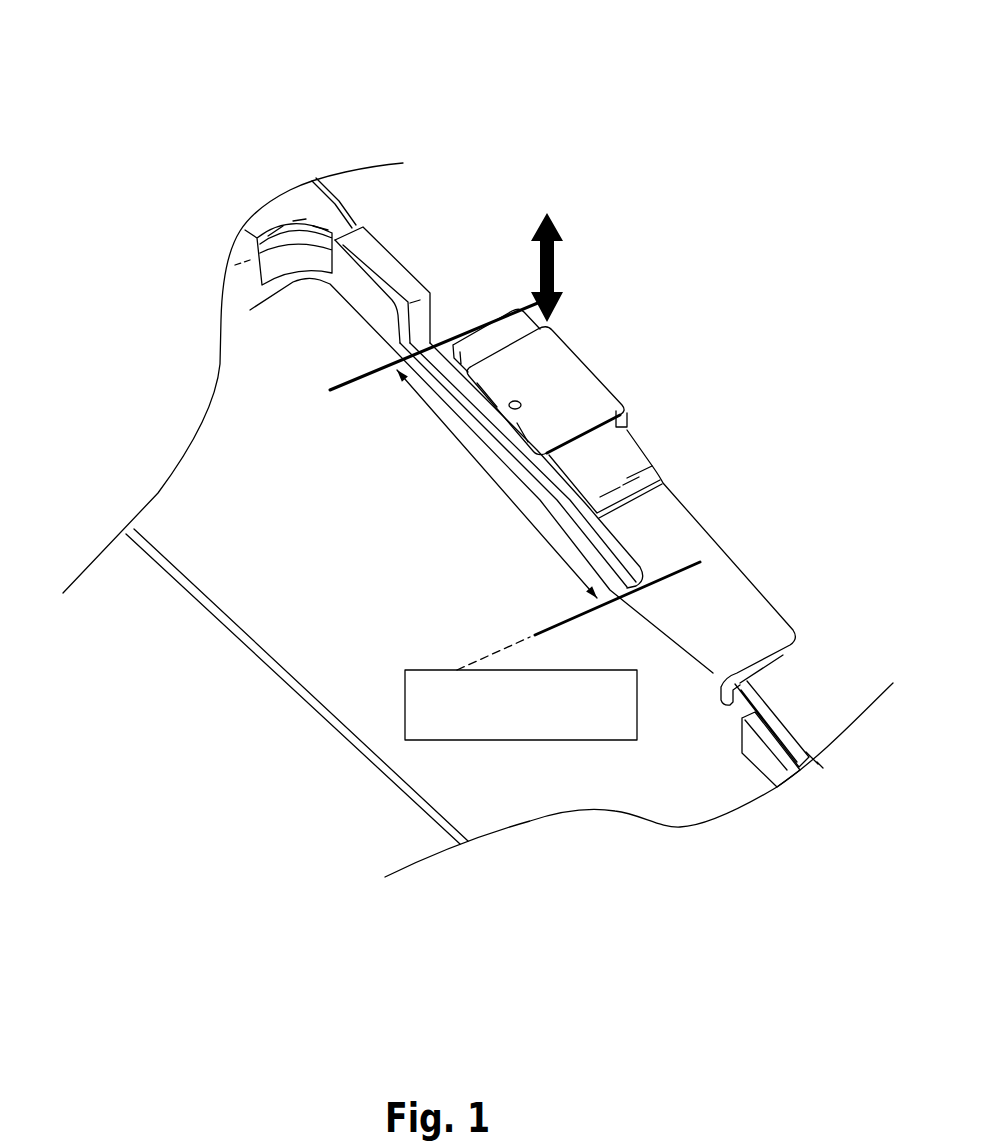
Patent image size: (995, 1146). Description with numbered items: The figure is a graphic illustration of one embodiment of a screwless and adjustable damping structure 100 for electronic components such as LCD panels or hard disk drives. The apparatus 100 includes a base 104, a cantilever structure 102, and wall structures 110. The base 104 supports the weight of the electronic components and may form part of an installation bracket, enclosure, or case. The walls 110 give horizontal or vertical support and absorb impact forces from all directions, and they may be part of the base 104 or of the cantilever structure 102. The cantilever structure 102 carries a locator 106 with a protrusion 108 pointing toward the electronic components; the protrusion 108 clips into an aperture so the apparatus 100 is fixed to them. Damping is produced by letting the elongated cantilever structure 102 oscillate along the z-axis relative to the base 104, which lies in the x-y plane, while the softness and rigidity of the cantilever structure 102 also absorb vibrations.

The screwless and adjustable damping structure 100 is at (130, 62).
The cantilever structure 102 is at (632, 450).
The base 104 is at (277, 639).
The locator 106 is at (570, 370).
The protrusion 108 is at (493, 408).
The wall structures 110 is at (357, 200).